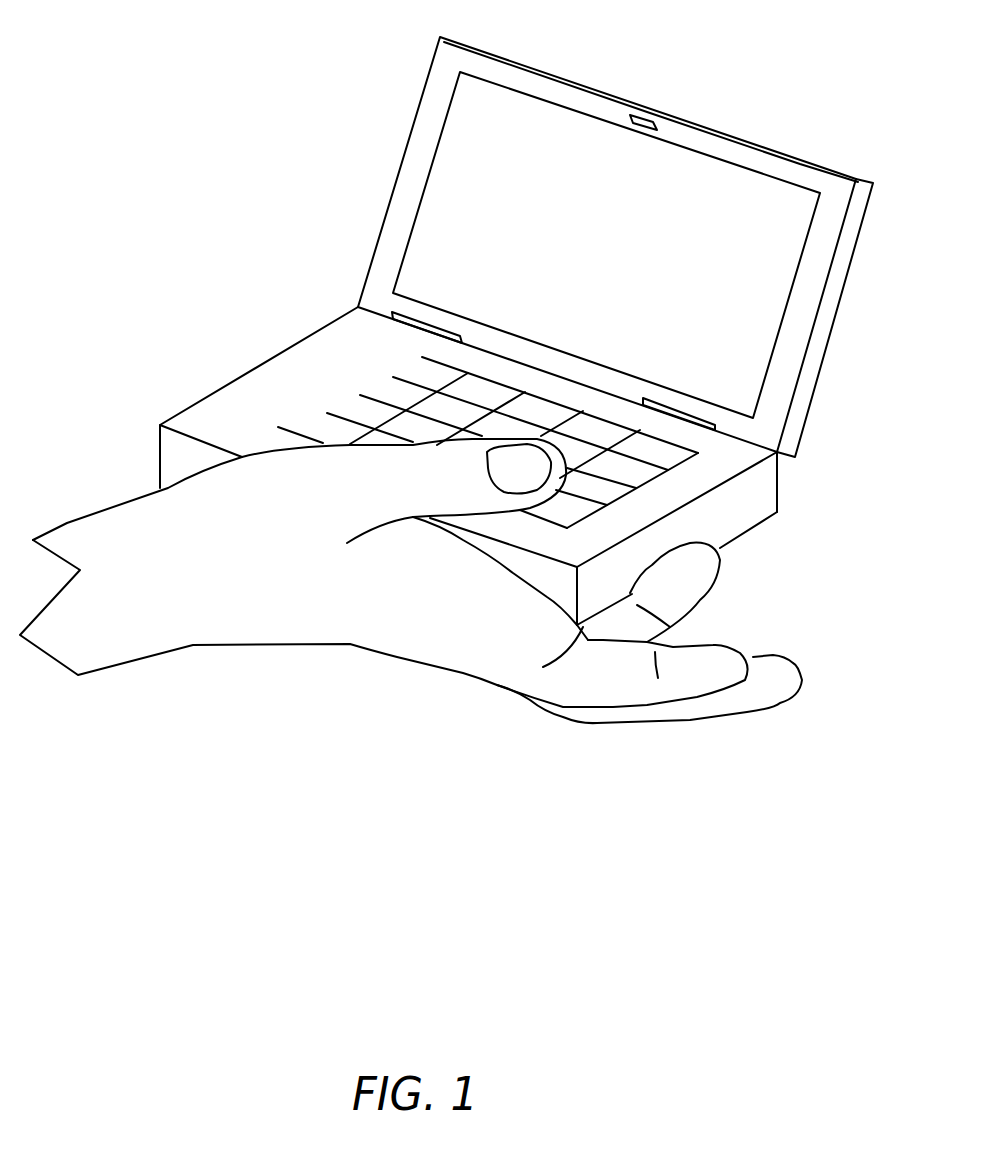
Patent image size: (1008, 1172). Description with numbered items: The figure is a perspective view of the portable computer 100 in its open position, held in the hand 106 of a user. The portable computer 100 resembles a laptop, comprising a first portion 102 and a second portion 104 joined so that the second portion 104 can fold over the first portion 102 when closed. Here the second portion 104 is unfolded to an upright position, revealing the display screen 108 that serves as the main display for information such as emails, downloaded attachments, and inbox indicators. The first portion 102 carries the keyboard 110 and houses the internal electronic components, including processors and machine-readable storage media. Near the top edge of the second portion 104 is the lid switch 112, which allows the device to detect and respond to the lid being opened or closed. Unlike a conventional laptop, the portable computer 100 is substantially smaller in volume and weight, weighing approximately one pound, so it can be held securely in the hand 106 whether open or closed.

The portable computer 100 is at (491, 331).
The first portion 102 is at (477, 466).
The second portion 104 is at (629, 247).
The hand 106 is at (322, 615).
The display screen 108 is at (787, 240).
The keyboard 110 is at (697, 463).
The lid switch 112 is at (646, 114).